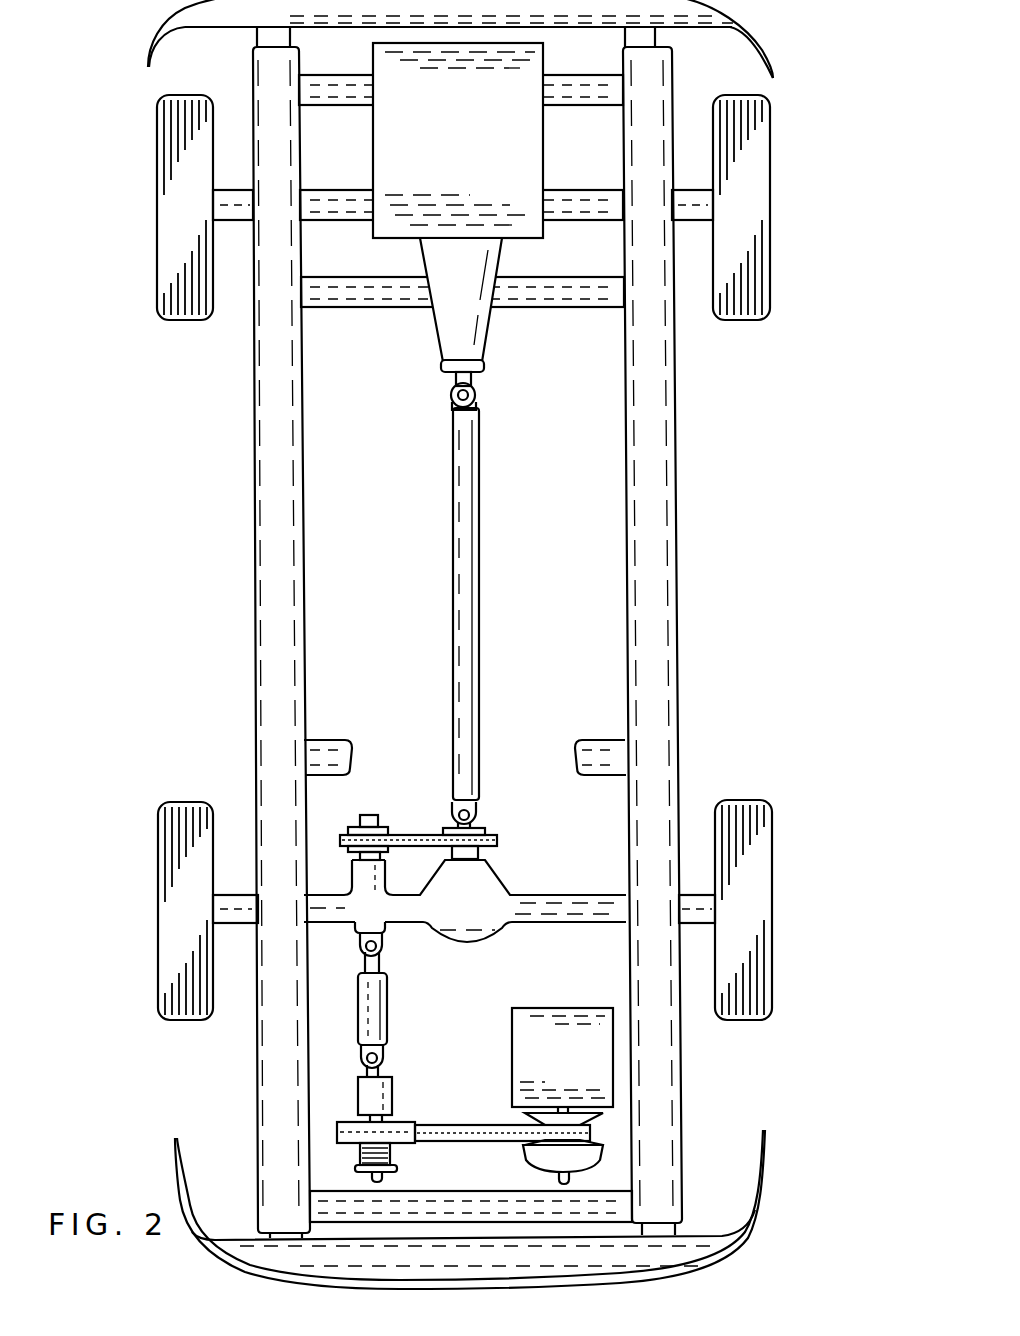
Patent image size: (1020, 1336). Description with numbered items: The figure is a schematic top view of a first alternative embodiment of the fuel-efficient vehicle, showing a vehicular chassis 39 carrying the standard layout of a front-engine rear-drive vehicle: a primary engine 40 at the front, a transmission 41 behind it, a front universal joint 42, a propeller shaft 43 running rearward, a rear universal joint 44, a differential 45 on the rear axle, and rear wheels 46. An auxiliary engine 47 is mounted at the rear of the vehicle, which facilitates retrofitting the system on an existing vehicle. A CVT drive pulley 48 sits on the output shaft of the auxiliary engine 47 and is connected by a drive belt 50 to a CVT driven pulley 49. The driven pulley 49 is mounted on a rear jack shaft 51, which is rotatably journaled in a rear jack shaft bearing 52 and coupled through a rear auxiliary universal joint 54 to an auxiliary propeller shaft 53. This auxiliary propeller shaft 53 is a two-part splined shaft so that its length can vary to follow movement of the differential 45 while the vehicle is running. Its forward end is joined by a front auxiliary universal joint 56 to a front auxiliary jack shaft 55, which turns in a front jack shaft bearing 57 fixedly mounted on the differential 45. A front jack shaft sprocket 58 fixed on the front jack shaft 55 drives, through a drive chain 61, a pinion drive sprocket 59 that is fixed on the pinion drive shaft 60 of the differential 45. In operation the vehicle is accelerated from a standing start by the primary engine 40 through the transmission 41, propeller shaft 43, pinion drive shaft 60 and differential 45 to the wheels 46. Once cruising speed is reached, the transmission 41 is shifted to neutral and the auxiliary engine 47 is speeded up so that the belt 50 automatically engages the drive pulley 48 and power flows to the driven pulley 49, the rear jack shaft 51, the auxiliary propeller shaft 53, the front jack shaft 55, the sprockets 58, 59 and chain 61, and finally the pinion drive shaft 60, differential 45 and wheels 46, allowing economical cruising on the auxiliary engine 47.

The vehicular chassis 39 is at (678, 523).
The primary engine 40 is at (478, 157).
The transmission 41 is at (482, 303).
The front universal joint 42 is at (483, 392).
The propeller shaft 43 is at (479, 587).
The rear universal joint 44 is at (485, 805).
The differential 45 is at (484, 917).
The rear wheels 46 is at (158, 862).
The auxiliary engine 47 is at (581, 1073).
The CVT drive pulley 48 is at (605, 1150).
The CVT driven pulley 49 is at (340, 1125).
The drive belt 50 is at (478, 1137).
The rear jack shaft 51 is at (372, 1178).
The rear jack shaft bearing 52 is at (393, 1090).
The auxiliary propeller shaft 53 is at (389, 1012).
The rear auxiliary universal joint 54 is at (389, 1058).
The front auxiliary jack shaft 55 is at (365, 815).
The front auxiliary universal joint 56 is at (383, 947).
The front jack shaft bearing 57 is at (397, 869).
The front jack shaft sprocket 58 is at (353, 830).
The pinion drive sprocket 59 is at (488, 821).
The pinion drive shaft 60 is at (474, 853).
The drive chain 61 is at (402, 836).